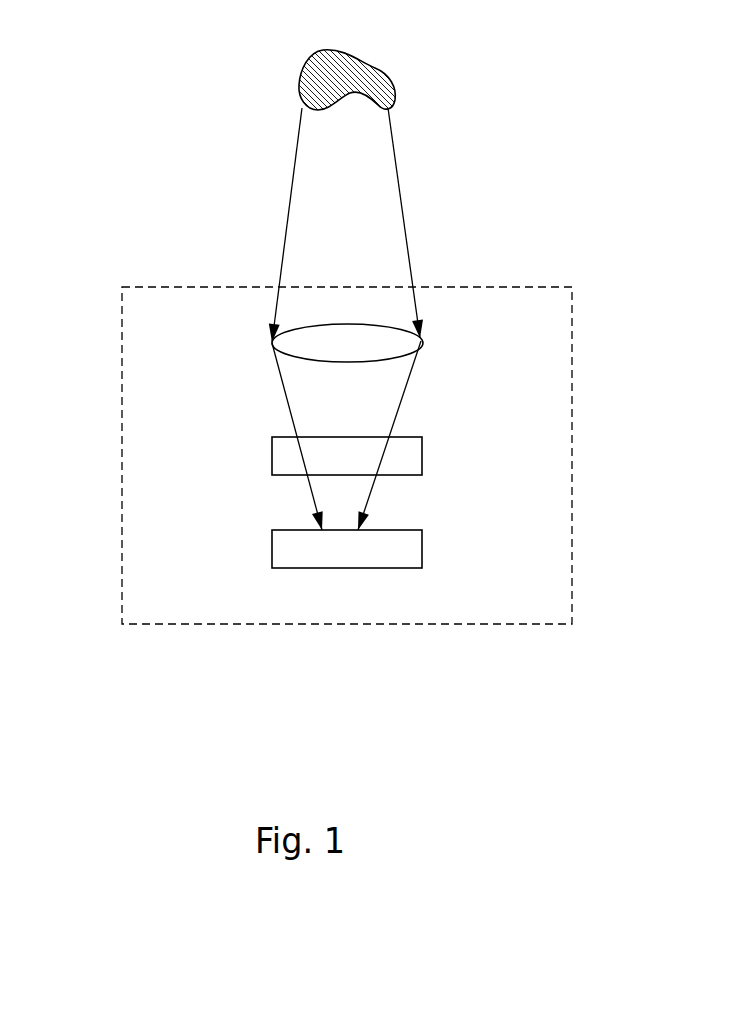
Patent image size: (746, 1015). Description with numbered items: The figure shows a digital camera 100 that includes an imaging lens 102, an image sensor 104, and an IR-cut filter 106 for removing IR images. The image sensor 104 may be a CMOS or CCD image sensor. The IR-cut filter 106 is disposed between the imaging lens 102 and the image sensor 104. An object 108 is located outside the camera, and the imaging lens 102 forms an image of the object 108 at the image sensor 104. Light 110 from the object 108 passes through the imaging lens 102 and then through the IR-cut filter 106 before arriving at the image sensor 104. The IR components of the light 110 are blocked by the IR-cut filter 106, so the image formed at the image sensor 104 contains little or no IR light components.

The digital camera 100 is at (156, 272).
The imaging lens 102 is at (272, 343).
The image sensor 104 is at (272, 548).
The IR-cut filter 106 is at (272, 455).
The object 108 is at (390, 77).
The light 110 is at (295, 203).